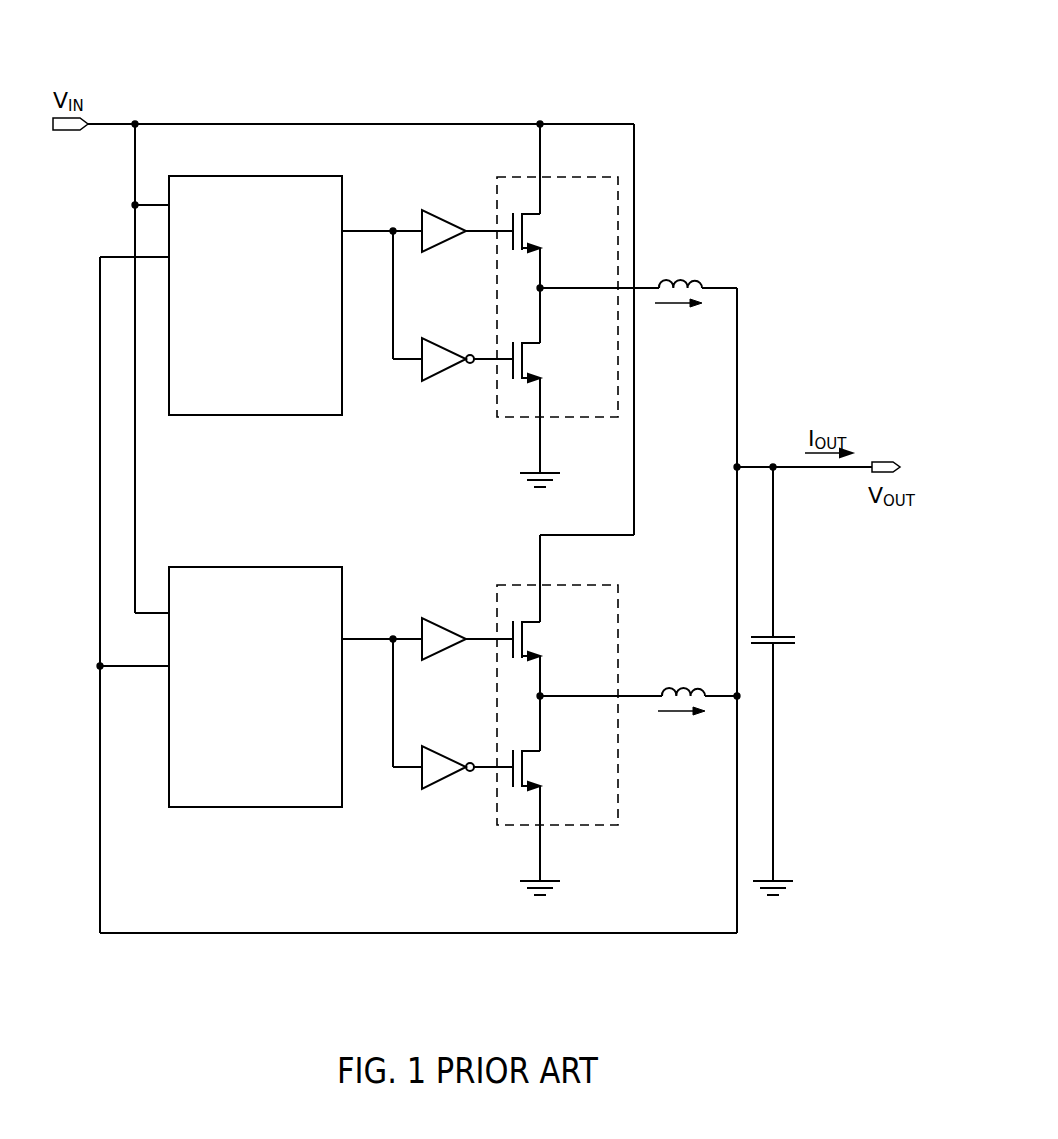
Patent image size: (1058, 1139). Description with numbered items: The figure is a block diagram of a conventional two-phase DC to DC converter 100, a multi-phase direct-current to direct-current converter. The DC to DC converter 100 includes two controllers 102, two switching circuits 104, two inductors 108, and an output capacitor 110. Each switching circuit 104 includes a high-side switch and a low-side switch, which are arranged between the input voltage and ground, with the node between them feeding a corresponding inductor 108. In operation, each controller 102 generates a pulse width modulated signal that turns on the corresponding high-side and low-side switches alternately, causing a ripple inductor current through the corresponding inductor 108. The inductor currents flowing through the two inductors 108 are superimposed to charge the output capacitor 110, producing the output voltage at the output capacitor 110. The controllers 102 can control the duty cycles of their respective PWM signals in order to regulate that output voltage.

The two-phase DC to DC converter 100 is at (675, 89).
The controller 102 is at (297, 176).
The switching circuit 104 is at (520, 177).
The inductor 108 is at (676, 283).
The output capacitor 110 is at (784, 633).